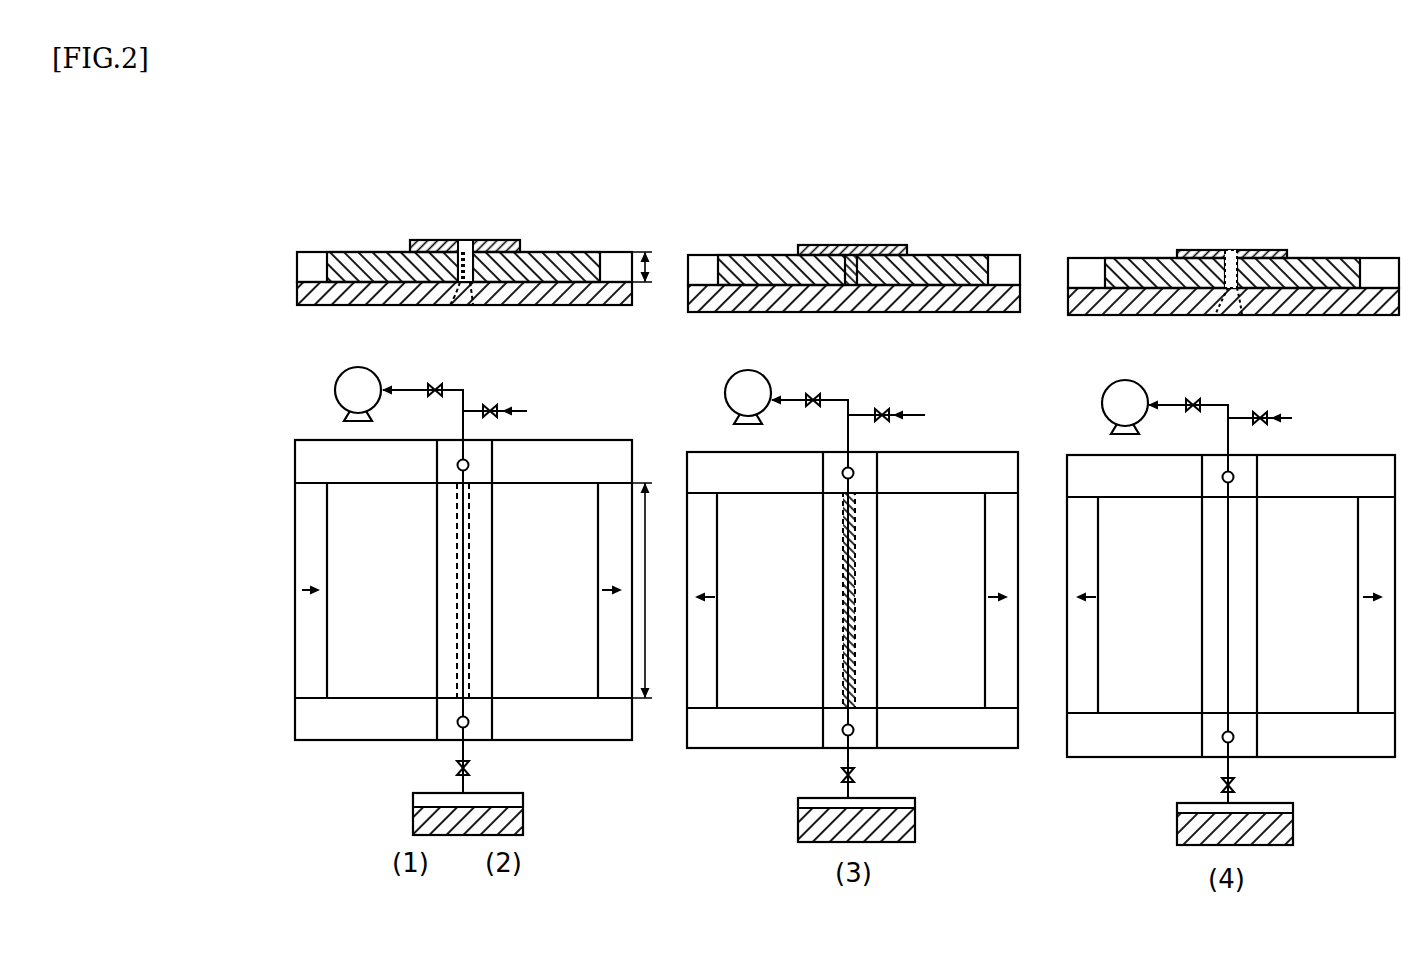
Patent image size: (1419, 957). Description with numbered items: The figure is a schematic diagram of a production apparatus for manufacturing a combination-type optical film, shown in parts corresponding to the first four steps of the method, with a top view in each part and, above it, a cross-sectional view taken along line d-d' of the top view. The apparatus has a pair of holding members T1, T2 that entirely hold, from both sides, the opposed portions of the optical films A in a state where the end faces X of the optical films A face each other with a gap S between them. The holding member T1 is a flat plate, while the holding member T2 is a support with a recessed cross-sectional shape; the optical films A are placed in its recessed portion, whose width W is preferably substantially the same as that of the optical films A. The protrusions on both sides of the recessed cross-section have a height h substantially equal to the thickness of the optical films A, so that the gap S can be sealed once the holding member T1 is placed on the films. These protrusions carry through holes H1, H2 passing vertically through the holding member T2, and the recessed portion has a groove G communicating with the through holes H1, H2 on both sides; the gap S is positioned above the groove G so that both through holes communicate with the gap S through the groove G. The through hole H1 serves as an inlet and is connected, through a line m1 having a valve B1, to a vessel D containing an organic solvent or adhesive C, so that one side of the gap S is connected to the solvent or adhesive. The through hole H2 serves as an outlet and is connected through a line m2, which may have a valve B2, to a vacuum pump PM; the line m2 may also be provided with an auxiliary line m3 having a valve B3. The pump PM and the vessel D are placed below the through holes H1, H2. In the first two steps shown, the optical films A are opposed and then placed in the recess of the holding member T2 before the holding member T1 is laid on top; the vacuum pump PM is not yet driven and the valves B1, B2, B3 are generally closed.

The optical film A is at (362, 250).
The end face X is at (438, 250).
The gap S is at (463, 250).
The holding member T1 is at (512, 250).
The holding member T2 is at (618, 300).
The height h is at (649, 267).
The groove G is at (460, 296).
The through hole H1 is at (469, 722).
The through hole H2 is at (469, 465).
The vacuum pump PM is at (336, 384).
The valve B1 is at (456, 770).
The valve B2 is at (436, 382).
The valve B3 is at (497, 415).
The line m1 is at (468, 748).
The line m2 is at (466, 395).
The auxiliary line m3 is at (472, 411).
The width W is at (654, 590).
The section line end d is at (842, 611).
The section line end d' is at (894, 615).
The organic solvent or adhesive C is at (849, 290).
The vessel D is at (523, 800).